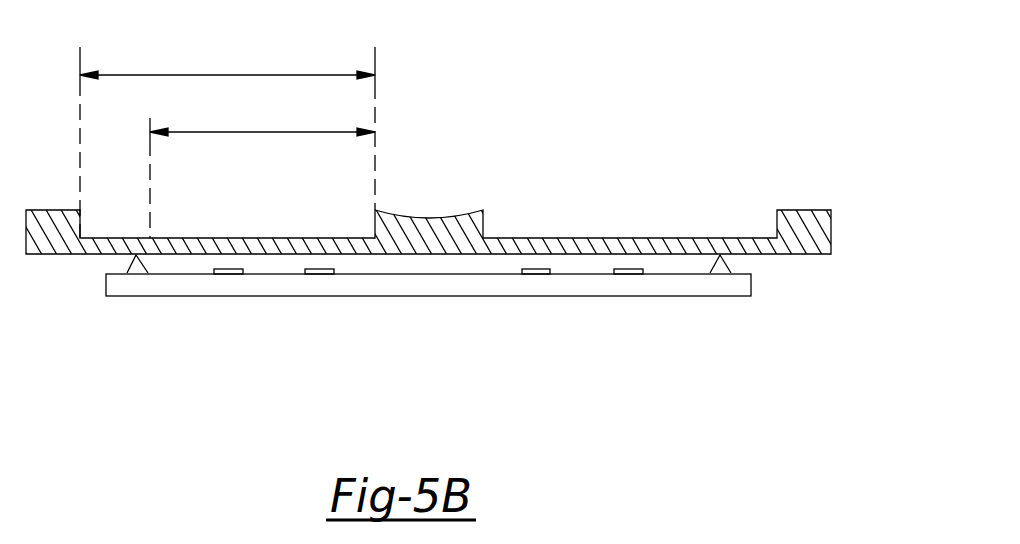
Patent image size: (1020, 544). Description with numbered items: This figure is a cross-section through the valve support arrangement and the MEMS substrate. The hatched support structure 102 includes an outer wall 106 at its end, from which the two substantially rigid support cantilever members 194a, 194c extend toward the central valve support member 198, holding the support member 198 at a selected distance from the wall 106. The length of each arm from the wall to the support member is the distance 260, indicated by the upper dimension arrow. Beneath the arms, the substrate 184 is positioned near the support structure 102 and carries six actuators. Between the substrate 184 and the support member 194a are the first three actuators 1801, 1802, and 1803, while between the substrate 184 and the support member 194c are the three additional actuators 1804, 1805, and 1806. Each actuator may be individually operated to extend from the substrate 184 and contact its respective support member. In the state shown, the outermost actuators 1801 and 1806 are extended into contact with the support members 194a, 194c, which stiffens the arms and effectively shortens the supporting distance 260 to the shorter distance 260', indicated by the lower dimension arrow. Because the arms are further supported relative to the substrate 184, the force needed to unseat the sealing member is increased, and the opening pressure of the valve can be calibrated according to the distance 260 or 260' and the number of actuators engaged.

The support structure 102 is at (440, 178).
The outer wall 106 is at (801, 210).
The substrate 184 is at (751, 285).
The support cantilever member 194a is at (200, 238).
The support cantilever member 194c is at (642, 240).
The valve support member 198 is at (437, 218).
The length 260 is at (227, 119).
The shortened distance 260' is at (262, 126).
The actuator 1801 is at (133, 263).
The actuator 1802 is at (227, 274).
The actuator 1803 is at (320, 274).
The actuator 1804 is at (535, 274).
The actuator 1805 is at (627, 274).
The actuator 1806 is at (720, 265).